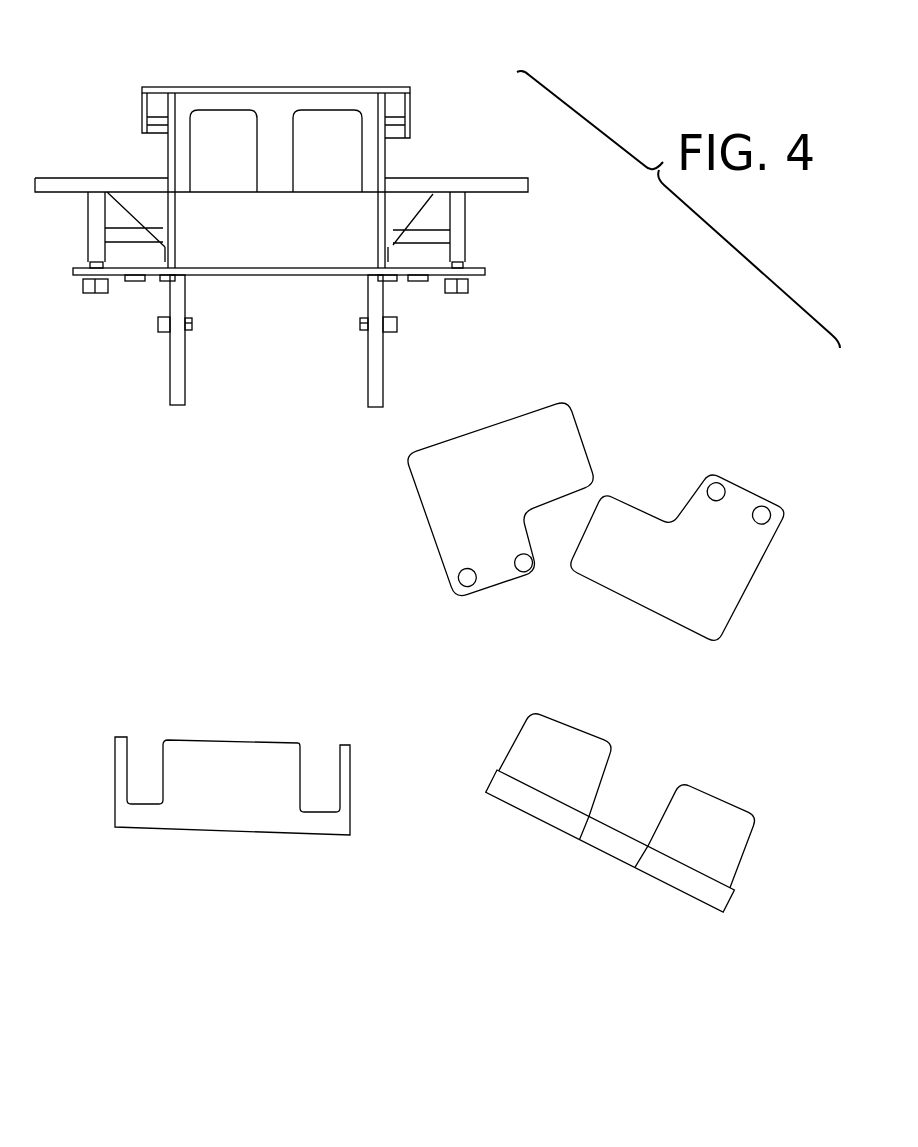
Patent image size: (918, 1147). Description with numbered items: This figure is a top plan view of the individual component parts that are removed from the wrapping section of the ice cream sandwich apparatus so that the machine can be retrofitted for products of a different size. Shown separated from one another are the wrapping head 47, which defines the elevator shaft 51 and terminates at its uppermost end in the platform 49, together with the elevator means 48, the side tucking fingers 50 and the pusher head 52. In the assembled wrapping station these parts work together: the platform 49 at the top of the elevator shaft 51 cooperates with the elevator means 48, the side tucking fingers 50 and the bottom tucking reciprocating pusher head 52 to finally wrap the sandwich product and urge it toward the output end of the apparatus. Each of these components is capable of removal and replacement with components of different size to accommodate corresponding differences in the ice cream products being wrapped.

The wrapping head 47 is at (418, 107).
The elevator means 48 is at (221, 800).
The platform 49 is at (222, 108).
The side tucking fingers 50 is at (508, 585).
The elevator shaft 51 is at (305, 193).
The pusher head 52 is at (690, 878).